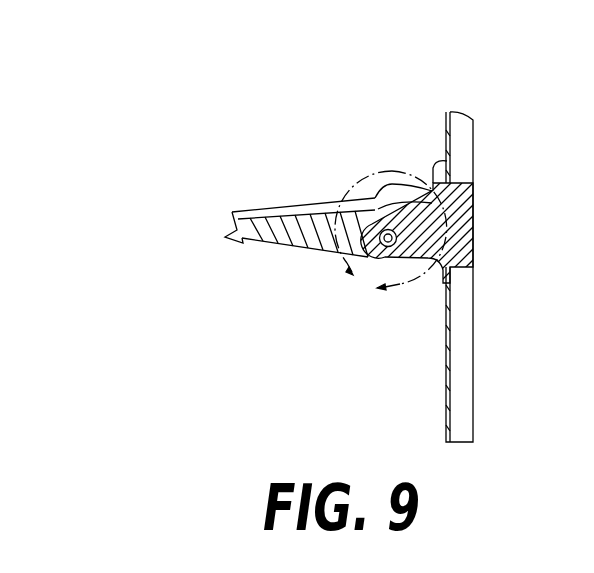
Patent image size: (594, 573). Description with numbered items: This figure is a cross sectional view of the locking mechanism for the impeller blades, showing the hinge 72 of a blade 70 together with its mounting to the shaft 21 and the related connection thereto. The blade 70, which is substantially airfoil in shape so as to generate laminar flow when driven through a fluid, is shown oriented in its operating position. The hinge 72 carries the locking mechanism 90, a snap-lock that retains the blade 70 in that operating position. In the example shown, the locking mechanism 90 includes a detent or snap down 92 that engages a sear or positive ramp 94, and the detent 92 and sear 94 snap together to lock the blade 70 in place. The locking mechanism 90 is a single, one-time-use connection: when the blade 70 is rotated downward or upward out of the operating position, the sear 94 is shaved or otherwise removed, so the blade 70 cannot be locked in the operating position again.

The shaft 21 is at (463, 152).
The blade 70 is at (240, 245).
The hinge 72 is at (302, 134).
The locking mechanism 90 is at (362, 172).
The detent 92 is at (392, 229).
The sear 94 is at (368, 213).